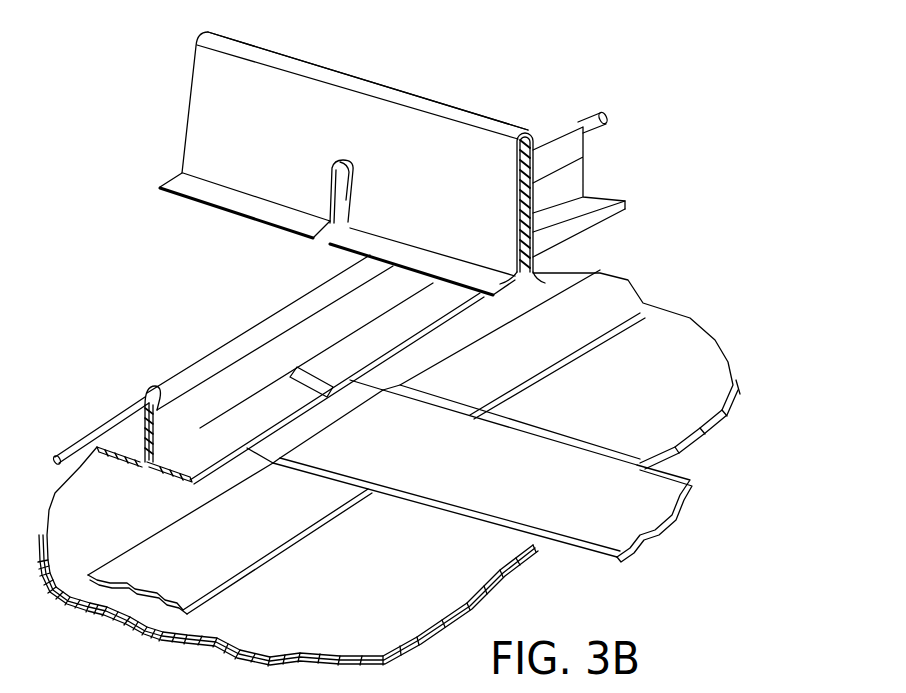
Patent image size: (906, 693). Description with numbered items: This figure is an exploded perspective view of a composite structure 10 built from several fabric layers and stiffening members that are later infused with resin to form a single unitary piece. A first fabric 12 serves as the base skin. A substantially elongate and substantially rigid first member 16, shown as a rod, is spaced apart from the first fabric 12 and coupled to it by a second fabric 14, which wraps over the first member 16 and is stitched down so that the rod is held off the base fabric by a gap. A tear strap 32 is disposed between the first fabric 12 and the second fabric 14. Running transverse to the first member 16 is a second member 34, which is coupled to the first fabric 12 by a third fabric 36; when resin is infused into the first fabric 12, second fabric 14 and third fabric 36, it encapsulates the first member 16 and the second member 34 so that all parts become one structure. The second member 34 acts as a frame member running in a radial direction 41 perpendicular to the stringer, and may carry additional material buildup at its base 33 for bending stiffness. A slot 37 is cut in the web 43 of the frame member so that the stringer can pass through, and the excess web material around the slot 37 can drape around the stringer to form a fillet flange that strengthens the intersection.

The composite structure 10 is at (143, 93).
The first fabric 12 is at (683, 350).
The second fabric 14 is at (573, 172).
The first member 16 is at (604, 130).
The tear strap 32 is at (219, 563).
The base 33 is at (544, 493).
The second member 34 is at (533, 143).
The third fabric 36 is at (400, 97).
The slot 37 is at (331, 180).
The radial direction 41 is at (71, 10).
The web 43 is at (200, 133).